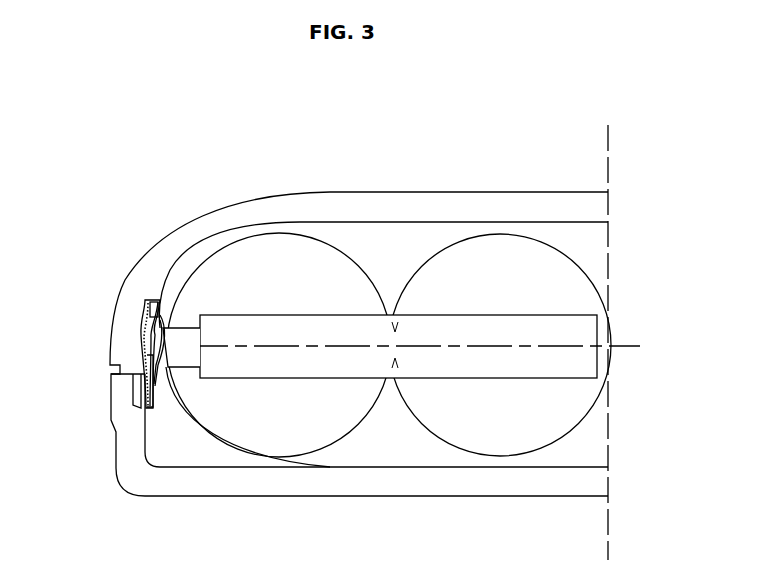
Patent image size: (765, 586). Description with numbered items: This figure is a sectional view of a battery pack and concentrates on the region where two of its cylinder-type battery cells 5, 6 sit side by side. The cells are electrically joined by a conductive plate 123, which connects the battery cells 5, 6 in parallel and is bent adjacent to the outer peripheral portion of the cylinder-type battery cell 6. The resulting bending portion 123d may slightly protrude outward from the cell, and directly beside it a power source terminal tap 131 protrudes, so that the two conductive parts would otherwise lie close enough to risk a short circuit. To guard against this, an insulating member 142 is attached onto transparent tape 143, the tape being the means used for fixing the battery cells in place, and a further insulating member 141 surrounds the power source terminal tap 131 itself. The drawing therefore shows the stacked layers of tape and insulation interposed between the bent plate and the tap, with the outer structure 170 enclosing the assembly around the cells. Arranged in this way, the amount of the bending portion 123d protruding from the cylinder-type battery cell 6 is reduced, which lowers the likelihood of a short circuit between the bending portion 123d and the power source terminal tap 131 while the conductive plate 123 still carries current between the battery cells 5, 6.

The cylinder-type battery cell 5 is at (500, 345).
The cylinder-type battery cell 6 is at (279, 345).
The conductive plate 123 is at (331, 335).
The bending portion 123d is at (163, 340).
The power source terminal tap 131 is at (135, 341).
The insulating member 141 is at (145, 317).
The insulating member 142 is at (150, 304).
The transparent tape 143 is at (148, 303).
The housing unit 170 is at (598, 212).